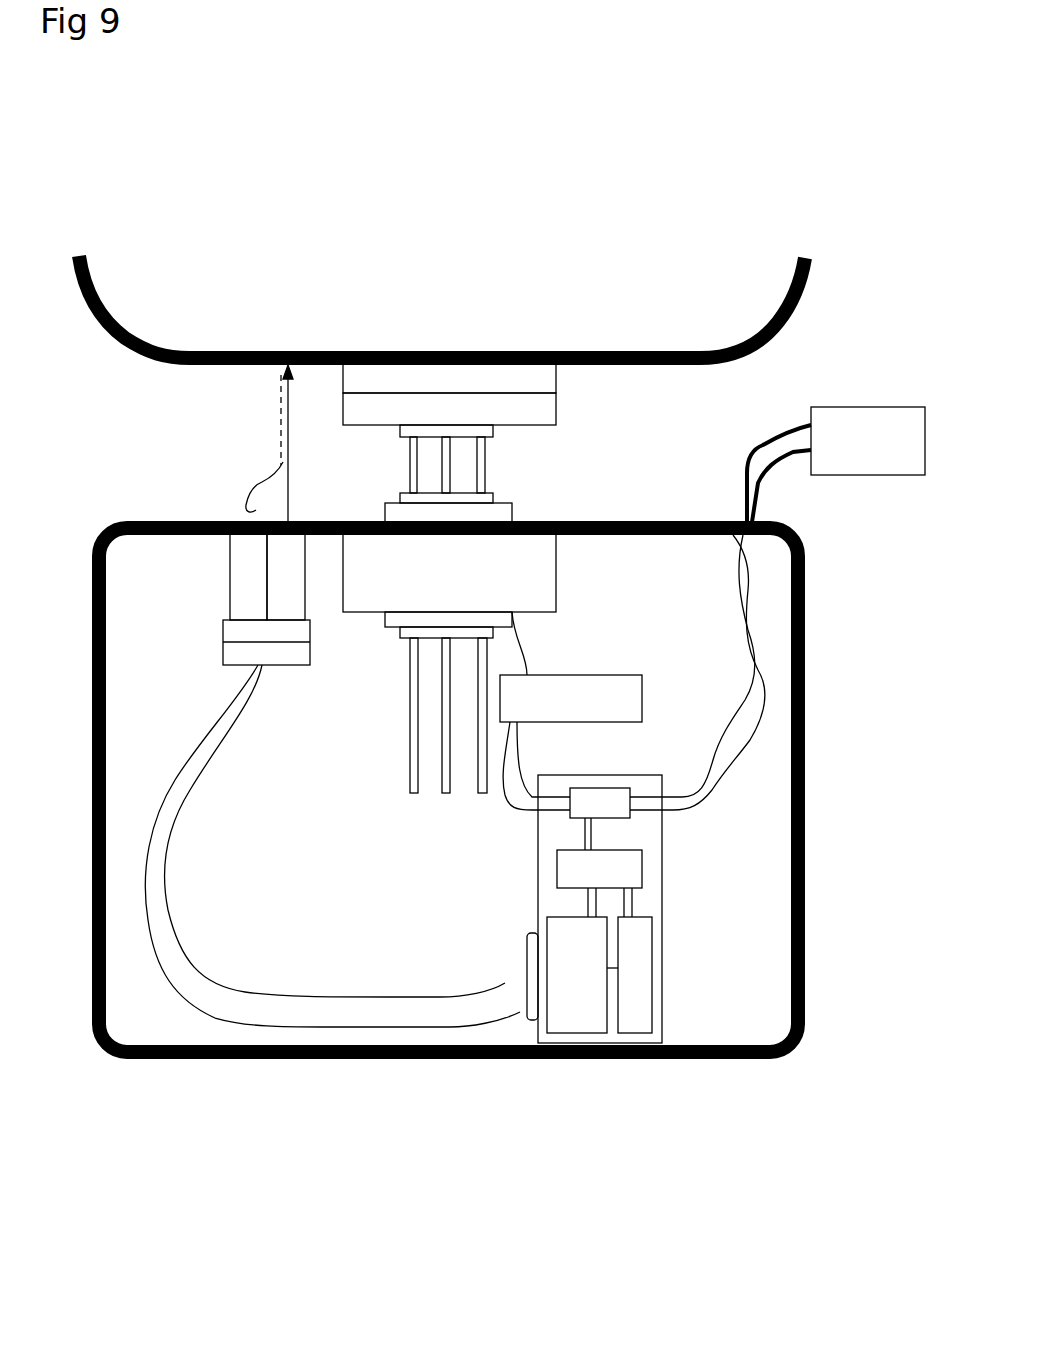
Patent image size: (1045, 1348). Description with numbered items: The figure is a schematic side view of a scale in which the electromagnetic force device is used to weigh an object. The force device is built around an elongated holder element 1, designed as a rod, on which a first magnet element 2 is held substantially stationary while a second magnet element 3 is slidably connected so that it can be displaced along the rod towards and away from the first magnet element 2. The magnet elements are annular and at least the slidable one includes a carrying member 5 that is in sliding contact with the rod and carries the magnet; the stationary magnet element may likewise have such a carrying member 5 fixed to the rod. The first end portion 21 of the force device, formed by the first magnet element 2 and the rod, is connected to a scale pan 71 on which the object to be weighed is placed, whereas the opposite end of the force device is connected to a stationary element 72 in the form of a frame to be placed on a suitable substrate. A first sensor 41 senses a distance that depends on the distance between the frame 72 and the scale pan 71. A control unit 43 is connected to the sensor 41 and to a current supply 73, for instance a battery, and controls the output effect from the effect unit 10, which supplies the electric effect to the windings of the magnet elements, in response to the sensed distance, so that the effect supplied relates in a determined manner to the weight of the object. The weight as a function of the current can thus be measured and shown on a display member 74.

The scale pan 71 is at (173, 350).
The first end portion 21 is at (367, 362).
The first magnet element 2 is at (403, 380).
The carrying member 5 is at (468, 498).
The second magnet element 3 is at (520, 558).
The elongated holder element 1 is at (420, 765).
The display member 74 is at (519, 702).
The stationary element 72 is at (135, 1055).
The first sensor 41 is at (252, 630).
The control unit 43 is at (537, 1037).
The effect unit 10 is at (598, 803).
The current supply 73 is at (857, 432).